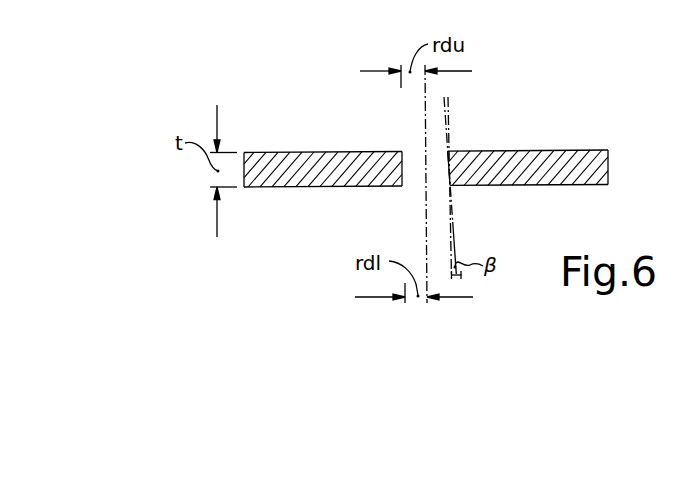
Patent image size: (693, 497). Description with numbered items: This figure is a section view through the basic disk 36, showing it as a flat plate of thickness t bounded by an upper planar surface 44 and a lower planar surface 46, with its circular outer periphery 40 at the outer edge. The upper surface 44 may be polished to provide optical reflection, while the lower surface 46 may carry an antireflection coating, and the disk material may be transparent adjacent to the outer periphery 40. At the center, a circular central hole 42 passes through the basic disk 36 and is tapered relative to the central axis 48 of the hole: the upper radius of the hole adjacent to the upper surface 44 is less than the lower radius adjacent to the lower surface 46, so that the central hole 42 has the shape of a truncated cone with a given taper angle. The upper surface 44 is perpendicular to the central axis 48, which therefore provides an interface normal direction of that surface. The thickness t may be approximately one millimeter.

The basic disk 36 is at (542, 108).
The circular outer periphery 40 is at (608, 157).
The circular central hole 42 is at (409, 155).
The upper planar surface 44 is at (291, 152).
The lower planar surface 46 is at (293, 187).
The central axis 48 is at (426, 113).